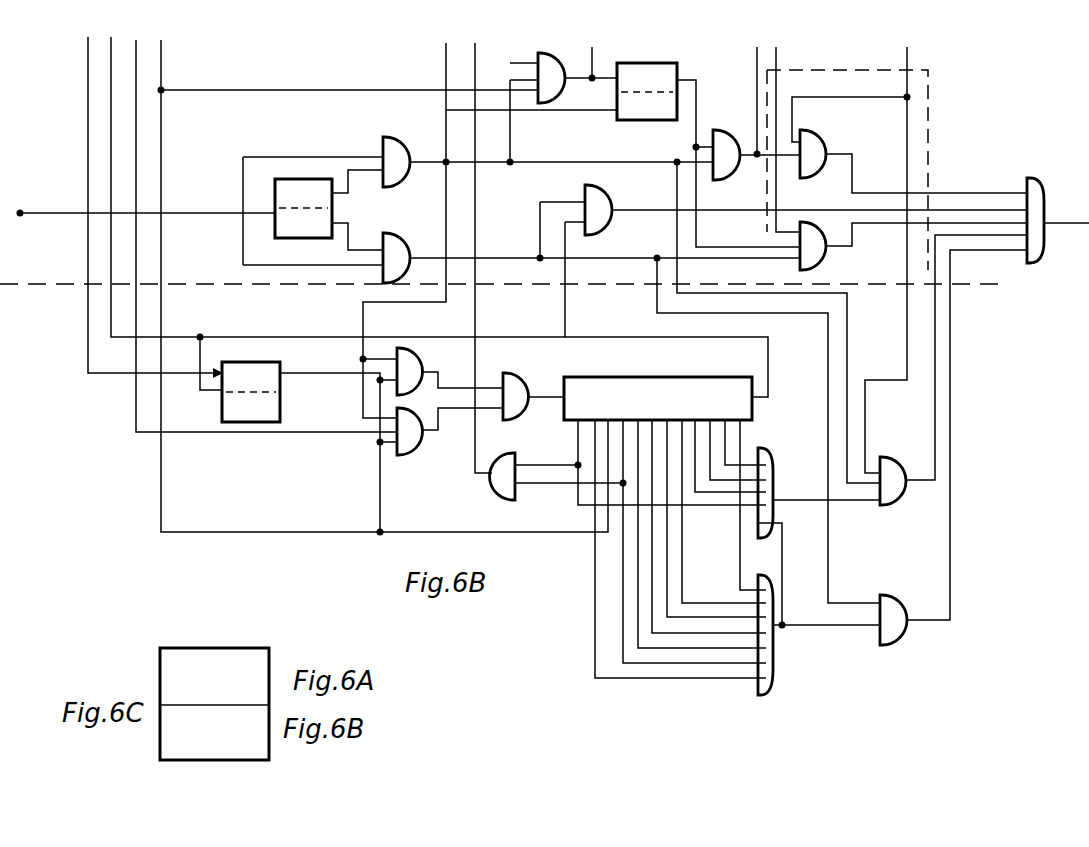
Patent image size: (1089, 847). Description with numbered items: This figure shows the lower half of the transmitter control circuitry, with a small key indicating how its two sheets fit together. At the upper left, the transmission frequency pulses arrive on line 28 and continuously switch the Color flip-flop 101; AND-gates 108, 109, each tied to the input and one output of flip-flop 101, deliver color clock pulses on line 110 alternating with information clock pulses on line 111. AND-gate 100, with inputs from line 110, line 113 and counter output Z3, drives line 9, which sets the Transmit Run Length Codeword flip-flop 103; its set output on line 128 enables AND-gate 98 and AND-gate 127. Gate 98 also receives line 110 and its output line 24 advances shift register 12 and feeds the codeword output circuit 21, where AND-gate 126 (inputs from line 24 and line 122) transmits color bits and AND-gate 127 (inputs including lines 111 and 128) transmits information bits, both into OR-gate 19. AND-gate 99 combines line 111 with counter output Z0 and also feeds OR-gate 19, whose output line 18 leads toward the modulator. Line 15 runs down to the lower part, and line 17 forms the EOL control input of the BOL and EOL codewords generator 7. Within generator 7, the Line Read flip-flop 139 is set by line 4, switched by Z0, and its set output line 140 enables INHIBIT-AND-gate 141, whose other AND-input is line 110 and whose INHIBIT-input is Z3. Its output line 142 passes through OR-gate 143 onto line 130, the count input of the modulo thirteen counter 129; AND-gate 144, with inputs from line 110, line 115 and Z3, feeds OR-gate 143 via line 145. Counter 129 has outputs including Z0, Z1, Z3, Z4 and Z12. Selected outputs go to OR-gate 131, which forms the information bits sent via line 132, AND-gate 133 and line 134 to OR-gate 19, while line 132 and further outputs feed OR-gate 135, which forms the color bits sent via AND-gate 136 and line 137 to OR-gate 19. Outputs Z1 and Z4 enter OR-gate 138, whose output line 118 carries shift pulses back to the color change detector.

The line 4 is at (88, 80).
The line 28 is at (48, 200).
The Color flip-flop 101 is at (298, 178).
The AND-gate 108 is at (411, 150).
The AND-gate 109 is at (416, 238).
The line 110 is at (592, 149).
The line 111 is at (480, 258).
The line 15 is at (446, 62).
The line 113 is at (512, 63).
The AND-gate 100 is at (543, 103).
The line 9 is at (592, 50).
The Transmit Run Length Codeword flip-flop 103 is at (655, 121).
The line 128 is at (700, 84).
The line 24 is at (757, 86).
The shift register 12 is at (776, 56).
The codeword output circuit 21 is at (930, 143).
The line 122 is at (907, 56).
The AND-gate 98 is at (723, 131).
The AND-gate 126 is at (830, 148).
The AND-gate 127 is at (828, 255).
The AND-gate 99 is at (612, 198).
The line 118 is at (475, 192).
The OR-gate 19 is at (1035, 178).
The switch 18 is at (1070, 222).
The line 17 is at (111, 317).
The Line Read flip-flop 139 is at (245, 360).
The line 140 is at (332, 375).
The line 115 is at (136, 406).
The INHIBIT-AND-gate 141 is at (421, 355).
The line 142 is at (488, 384).
The OR-gate 143 is at (532, 386).
The AND-gate 144 is at (417, 451).
The line 145 is at (466, 410).
The counter 129 is at (620, 377).
The line 130 is at (550, 405).
The OR-gate 138 is at (492, 497).
The OR-gate 135 is at (776, 507).
The OR-gate 131 is at (773, 678).
The line 132 is at (845, 626).
The AND-gate 133 is at (907, 616).
The line 134 is at (952, 467).
The AND-gate 136 is at (892, 468).
The line 137 is at (935, 400).
The BOL and EOL codewords generator 7 is at (306, 479).
The counter output Z3 is at (225, 90).
The counter output Z0 is at (770, 382).
The counter output Z1 is at (572, 448).
The counter output Z4 is at (565, 486).
The counter output Z12 is at (740, 461).